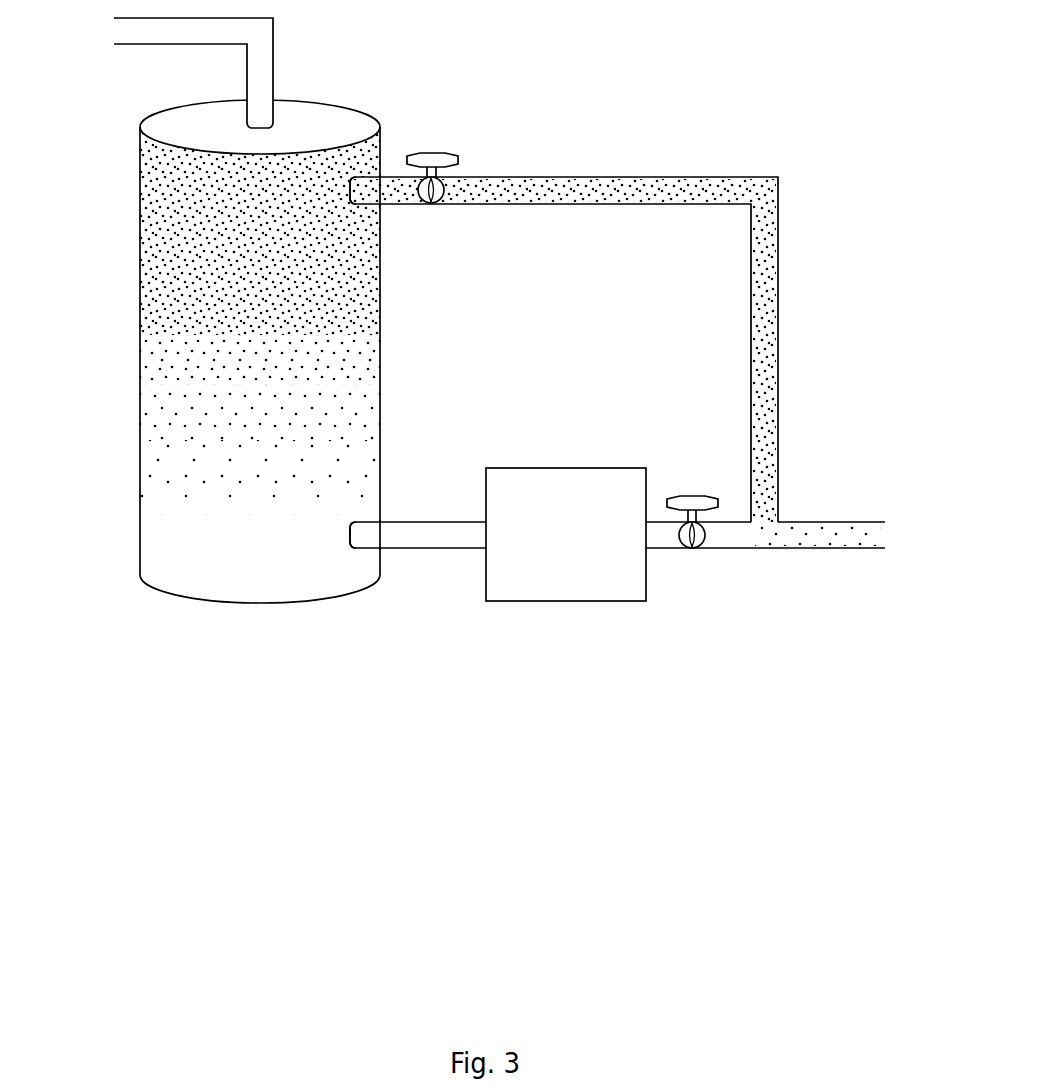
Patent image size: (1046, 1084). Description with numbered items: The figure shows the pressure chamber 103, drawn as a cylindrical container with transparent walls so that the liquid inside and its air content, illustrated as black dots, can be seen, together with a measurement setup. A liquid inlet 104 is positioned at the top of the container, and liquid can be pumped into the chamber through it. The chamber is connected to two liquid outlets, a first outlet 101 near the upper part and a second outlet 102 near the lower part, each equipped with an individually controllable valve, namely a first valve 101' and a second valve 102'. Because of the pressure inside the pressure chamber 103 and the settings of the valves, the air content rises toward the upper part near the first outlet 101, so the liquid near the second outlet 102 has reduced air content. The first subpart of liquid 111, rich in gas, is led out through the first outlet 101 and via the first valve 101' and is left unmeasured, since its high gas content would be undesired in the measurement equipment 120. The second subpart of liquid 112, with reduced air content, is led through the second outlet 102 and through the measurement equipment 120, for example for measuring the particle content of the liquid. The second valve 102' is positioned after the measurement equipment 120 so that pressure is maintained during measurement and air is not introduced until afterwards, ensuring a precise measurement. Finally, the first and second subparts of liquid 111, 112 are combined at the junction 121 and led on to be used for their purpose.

The first outlet 101 is at (404, 234).
The first valve 101' is at (469, 160).
The second outlet 102 is at (332, 590).
The second valve 102' is at (696, 464).
The pressure chamber 103 is at (140, 343).
The liquid inlet 104 is at (267, 137).
The first subpart of liquid 111 is at (581, 177).
The second subpart of liquid 112 is at (400, 537).
The measurement equipment 120 is at (575, 602).
The junction 121 is at (778, 520).